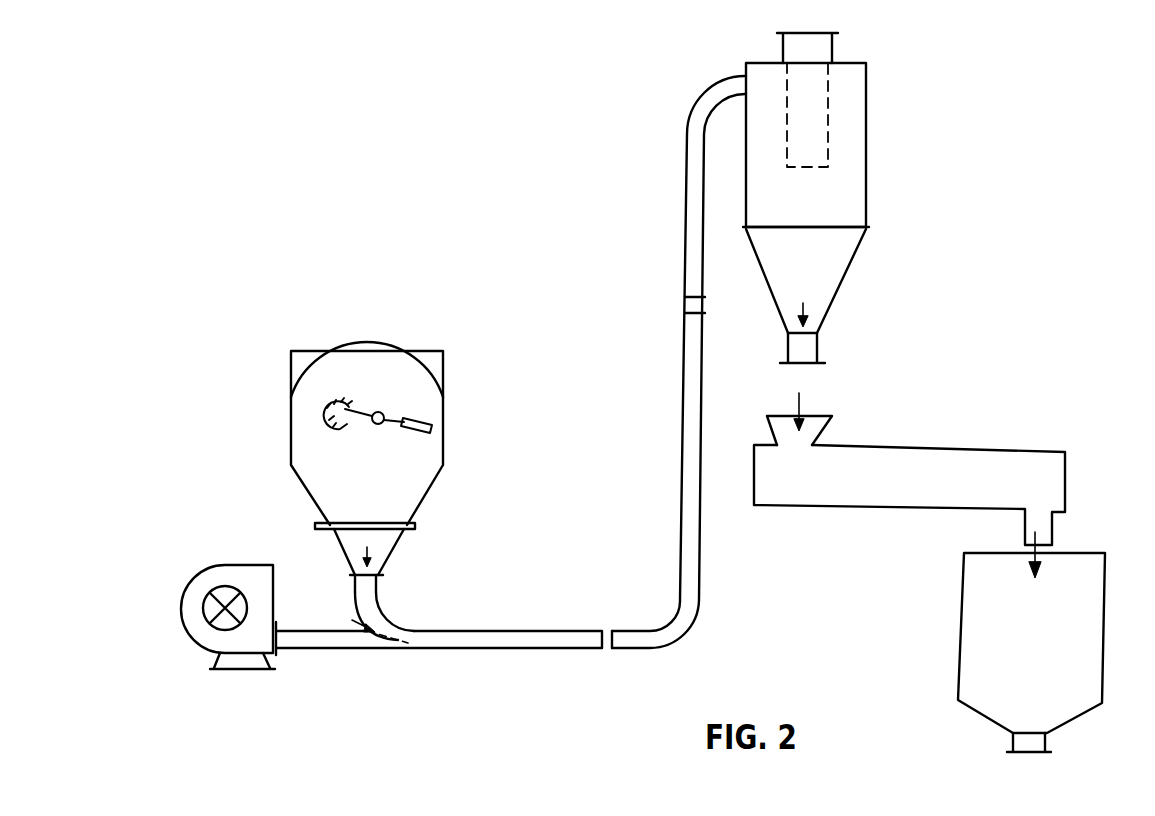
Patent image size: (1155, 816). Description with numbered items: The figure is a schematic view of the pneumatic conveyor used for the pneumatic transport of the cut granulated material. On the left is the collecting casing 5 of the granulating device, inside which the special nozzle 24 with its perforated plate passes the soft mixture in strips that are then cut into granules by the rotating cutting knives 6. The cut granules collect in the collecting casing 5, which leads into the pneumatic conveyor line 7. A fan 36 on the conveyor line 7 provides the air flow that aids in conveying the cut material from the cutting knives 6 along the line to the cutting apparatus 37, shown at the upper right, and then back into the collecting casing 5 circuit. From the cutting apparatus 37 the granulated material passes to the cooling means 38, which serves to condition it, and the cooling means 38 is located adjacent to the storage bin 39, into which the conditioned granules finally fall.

The collecting casing 5 is at (443, 467).
The rotating cutting knives 6 is at (384, 415).
The nozzle 24 is at (323, 422).
The pneumatic conveyor line 7 is at (475, 640).
The fan 36 is at (207, 635).
The cutting apparatus 37 is at (818, 276).
The cooling means 38 is at (848, 505).
The storage bin 39 is at (983, 615).